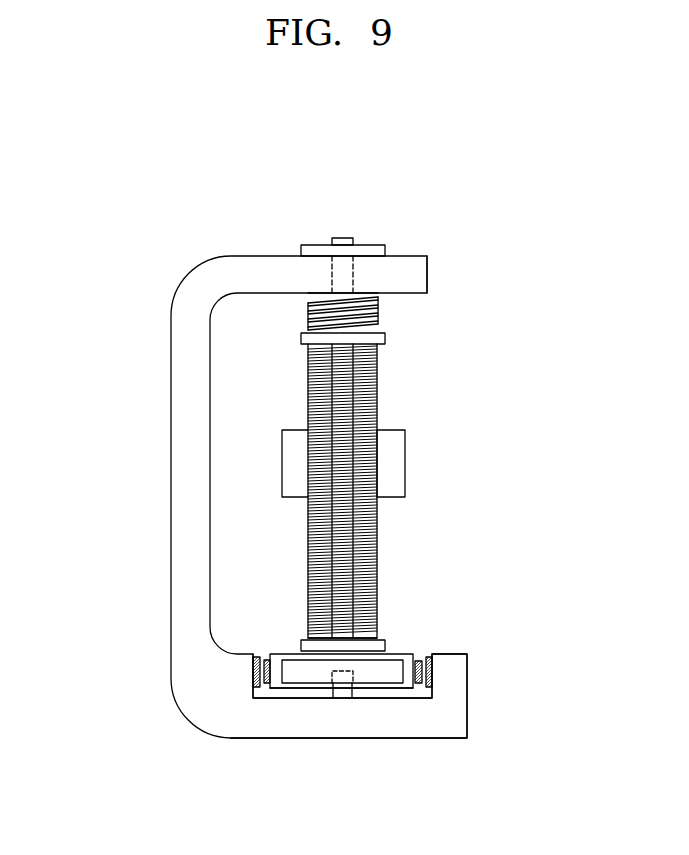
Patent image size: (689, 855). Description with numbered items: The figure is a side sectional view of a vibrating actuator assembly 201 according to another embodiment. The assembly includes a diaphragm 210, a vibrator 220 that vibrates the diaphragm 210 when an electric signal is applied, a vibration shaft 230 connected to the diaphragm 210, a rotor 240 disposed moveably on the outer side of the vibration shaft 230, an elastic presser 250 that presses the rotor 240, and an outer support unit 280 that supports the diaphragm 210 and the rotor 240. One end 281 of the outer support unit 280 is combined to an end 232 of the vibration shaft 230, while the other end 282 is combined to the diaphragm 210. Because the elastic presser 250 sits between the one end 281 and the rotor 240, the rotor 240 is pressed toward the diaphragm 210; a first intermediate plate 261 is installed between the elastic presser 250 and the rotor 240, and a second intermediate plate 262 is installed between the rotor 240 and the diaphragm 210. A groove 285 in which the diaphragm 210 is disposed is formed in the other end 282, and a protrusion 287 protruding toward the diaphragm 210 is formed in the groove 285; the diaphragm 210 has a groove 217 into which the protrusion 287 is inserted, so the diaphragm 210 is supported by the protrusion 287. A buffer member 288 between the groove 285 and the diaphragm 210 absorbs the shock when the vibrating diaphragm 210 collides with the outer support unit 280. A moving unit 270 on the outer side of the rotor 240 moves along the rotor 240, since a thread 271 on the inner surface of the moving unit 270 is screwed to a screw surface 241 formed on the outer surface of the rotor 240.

The vibrating actuator assembly 201 is at (102, 237).
The outer support unit 280 is at (163, 497).
The one end of the outer support unit 281 is at (277, 267).
The end of the vibration shaft 232 is at (350, 240).
The vibration shaft 230 is at (353, 407).
The elastic presser 250 is at (380, 313).
The first intermediate plate 261 is at (385, 339).
The moving unit 270 is at (406, 465).
The thread 271 is at (378, 465).
The screw surface 241 is at (378, 543).
The rotor 240 is at (379, 582).
The second intermediate plate 262 is at (382, 645).
The diaphragm 210 is at (410, 654).
The buffer member 288 is at (257, 687).
The vibrator 220 is at (423, 690).
The groove 285 is at (277, 696).
The other end of the outer support unit 282 is at (320, 730).
The groove of the diaphragm 217 is at (357, 672).
The protrusion 287 is at (347, 695).